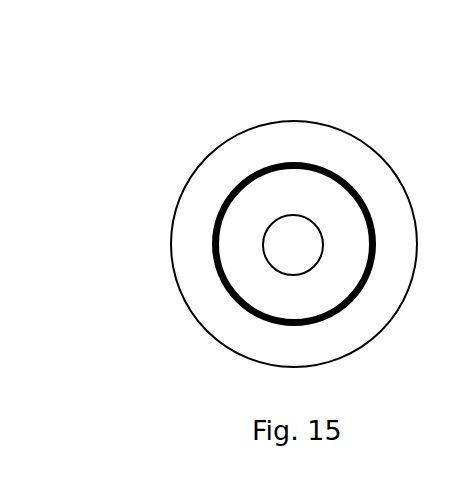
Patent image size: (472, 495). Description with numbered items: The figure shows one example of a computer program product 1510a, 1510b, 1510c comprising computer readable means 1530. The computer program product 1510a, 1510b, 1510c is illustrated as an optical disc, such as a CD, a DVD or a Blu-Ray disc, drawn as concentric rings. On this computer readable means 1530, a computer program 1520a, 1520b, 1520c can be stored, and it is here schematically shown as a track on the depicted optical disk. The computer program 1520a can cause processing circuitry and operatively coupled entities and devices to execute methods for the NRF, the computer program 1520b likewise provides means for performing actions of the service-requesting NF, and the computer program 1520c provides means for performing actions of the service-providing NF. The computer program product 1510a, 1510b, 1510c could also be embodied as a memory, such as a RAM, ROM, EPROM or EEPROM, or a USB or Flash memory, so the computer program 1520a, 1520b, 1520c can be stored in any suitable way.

The computer program product 1510a is at (231, 210).
The computer program product 1510b is at (231, 226).
The computer program product 1510c is at (148, 159).
The computer program 1520a is at (209, 244).
The computer program 1520b is at (209, 244).
The computer program 1520c is at (221, 266).
The computer readable means 1530 is at (250, 345).